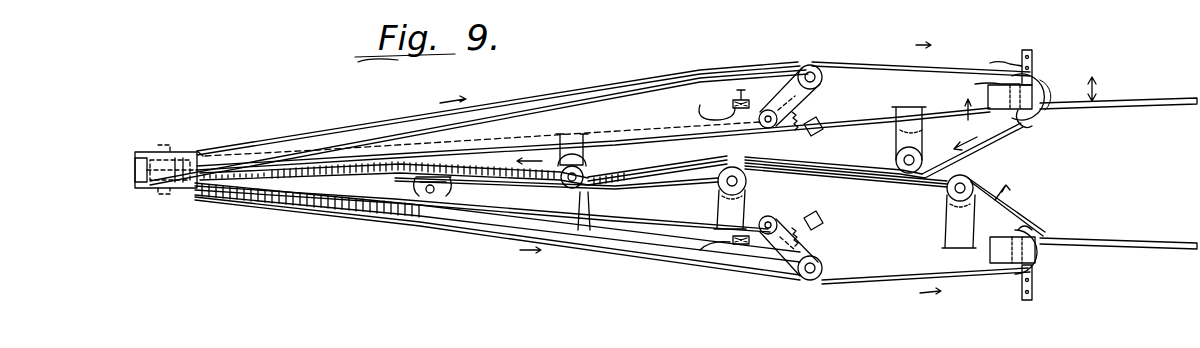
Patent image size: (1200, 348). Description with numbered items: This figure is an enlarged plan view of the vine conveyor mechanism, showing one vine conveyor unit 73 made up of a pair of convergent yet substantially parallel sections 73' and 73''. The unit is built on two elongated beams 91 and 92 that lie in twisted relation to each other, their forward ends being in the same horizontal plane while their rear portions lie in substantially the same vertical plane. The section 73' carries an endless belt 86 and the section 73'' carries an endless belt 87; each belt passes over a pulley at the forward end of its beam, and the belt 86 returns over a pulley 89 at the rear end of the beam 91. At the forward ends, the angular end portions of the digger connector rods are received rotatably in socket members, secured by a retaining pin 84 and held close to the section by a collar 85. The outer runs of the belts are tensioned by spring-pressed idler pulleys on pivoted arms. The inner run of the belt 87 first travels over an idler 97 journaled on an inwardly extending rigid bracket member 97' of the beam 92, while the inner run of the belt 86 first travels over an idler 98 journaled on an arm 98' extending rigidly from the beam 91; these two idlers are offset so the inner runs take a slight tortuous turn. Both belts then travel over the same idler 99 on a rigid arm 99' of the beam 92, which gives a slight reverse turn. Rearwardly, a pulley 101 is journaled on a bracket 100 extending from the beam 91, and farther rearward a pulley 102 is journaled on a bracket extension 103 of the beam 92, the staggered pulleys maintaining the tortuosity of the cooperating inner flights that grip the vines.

The vine conveyor unit 73 is at (479, 109).
The conveyor section 73' is at (921, 104).
The conveyor section 73'' is at (926, 293).
The retaining pin 84 is at (991, 56).
The collar 85 is at (980, 77).
The endless belt 86 is at (584, 134).
The endless belt 87 is at (592, 240).
The pulley 89 is at (175, 152).
The beam 91 is at (663, 122).
The beam 92 is at (654, 220).
The idler 97 is at (975, 205).
The bracket member 97' is at (972, 221).
The idler 98 is at (891, 154).
The arm 98' is at (921, 133).
The idler 99 is at (798, 177).
The rigid arm 99' is at (718, 220).
The bracket 100 is at (570, 192).
The pulley 101 is at (520, 185).
The pulley 102 is at (462, 205).
The bracket extension 103 is at (405, 215).